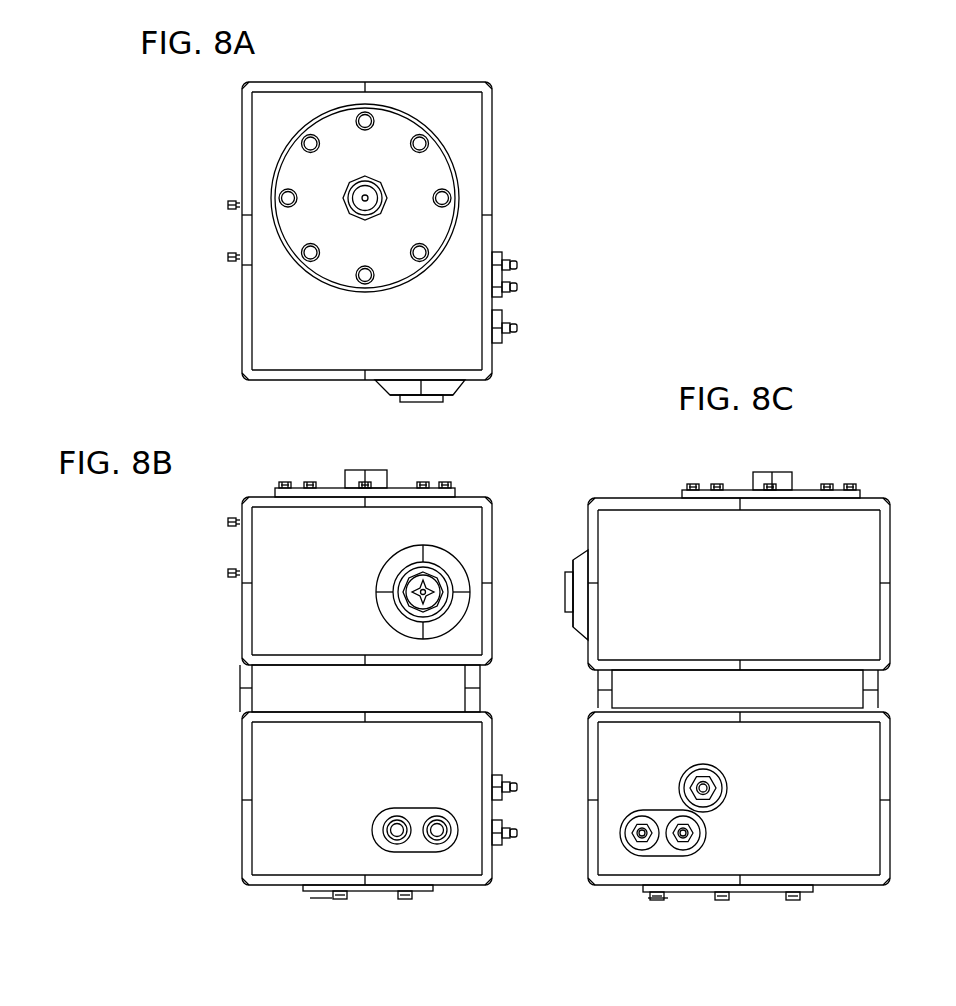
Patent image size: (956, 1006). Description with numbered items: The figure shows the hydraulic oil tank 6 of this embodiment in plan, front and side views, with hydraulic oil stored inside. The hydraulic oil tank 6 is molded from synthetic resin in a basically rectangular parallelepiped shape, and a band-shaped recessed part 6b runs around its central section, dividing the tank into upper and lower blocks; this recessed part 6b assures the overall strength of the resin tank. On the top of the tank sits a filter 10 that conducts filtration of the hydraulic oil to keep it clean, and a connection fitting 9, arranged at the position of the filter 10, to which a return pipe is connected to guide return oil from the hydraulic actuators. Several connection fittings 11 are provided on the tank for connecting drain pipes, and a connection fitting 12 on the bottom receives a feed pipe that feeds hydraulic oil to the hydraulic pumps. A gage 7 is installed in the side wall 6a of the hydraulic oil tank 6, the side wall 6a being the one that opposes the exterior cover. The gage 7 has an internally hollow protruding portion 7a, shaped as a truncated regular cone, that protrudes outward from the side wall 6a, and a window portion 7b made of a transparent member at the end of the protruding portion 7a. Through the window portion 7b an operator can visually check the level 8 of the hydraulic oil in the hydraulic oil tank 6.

In FIG. 8A, the hydraulic oil tank 6 is at (494, 126).
In FIG. 8B, the hydraulic oil tank 6 is at (240, 555).
In FIG. 8C, the hydraulic oil tank 6 is at (892, 556).
In FIG. 8A, the side wall 6a is at (310, 384).
In FIG. 8B, the side wall 6a is at (268, 613).
In FIG. 8C, the side wall 6a is at (589, 532).
In FIG. 8B, the recessed part 6b is at (288, 693).
In FIG. 8C, the recessed part 6b is at (838, 690).
In FIG. 8A, the gage 7 is at (466, 382).
In FIG. 8B, the gage 7 is at (438, 572).
In FIG. 8C, the gage 7 is at (586, 636).
In FIG. 8A, the protruding portion 7a is at (462, 394).
In FIG. 8B, the protruding portion 7a is at (458, 570).
In FIG. 8C, the protruding portion 7a is at (572, 625).
In FIG. 8A, the window portion 7b is at (430, 403).
In FIG. 8B, the window portion 7b is at (436, 597).
In FIG. 8C, the window portion 7b is at (566, 596).
In FIG. 8B, the level 8 is at (421, 590).
In FIG. 8A, the connection fitting 9 is at (366, 194).
In FIG. 8B, the connection fitting 9 is at (346, 476).
In FIG. 8C, the connection fitting 9 is at (760, 472).
In FIG. 8A, the filter 10 is at (432, 214).
In FIG. 8B, the filter 10 is at (332, 486).
In FIG. 8C, the filter 10 is at (740, 488).
In FIG. 8A, the connection fittings 11 is at (519, 264).
In FIG. 8B, the connection fittings 11 is at (514, 782).
In FIG. 8C, the connection fittings 11 is at (643, 840).
In FIG. 8B, the connection fitting 12 is at (375, 893).
In FIG. 8C, the connection fitting 12 is at (738, 893).